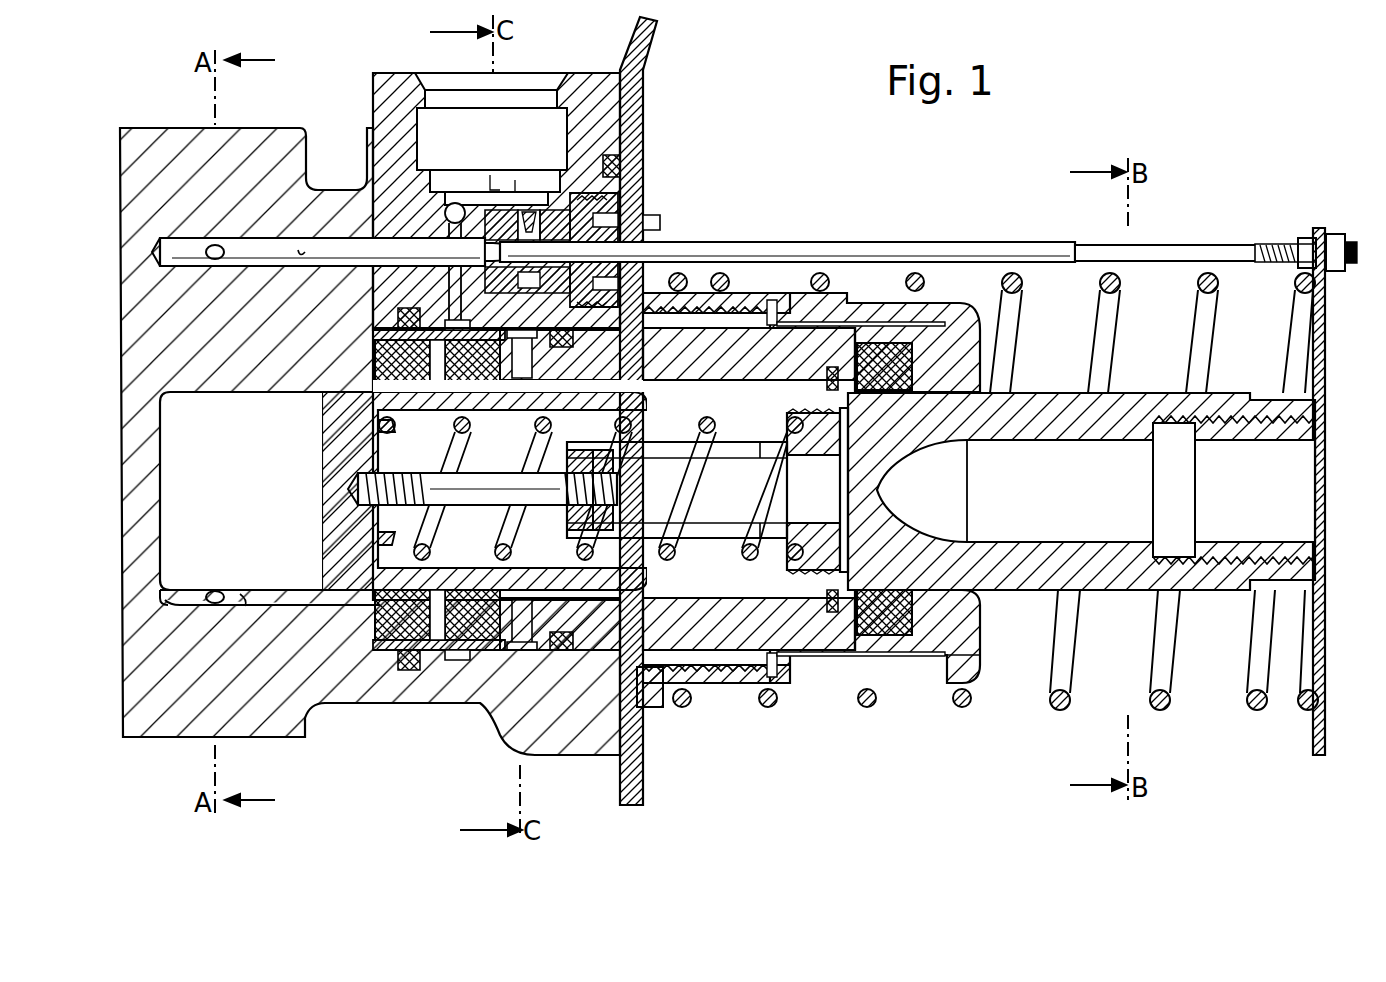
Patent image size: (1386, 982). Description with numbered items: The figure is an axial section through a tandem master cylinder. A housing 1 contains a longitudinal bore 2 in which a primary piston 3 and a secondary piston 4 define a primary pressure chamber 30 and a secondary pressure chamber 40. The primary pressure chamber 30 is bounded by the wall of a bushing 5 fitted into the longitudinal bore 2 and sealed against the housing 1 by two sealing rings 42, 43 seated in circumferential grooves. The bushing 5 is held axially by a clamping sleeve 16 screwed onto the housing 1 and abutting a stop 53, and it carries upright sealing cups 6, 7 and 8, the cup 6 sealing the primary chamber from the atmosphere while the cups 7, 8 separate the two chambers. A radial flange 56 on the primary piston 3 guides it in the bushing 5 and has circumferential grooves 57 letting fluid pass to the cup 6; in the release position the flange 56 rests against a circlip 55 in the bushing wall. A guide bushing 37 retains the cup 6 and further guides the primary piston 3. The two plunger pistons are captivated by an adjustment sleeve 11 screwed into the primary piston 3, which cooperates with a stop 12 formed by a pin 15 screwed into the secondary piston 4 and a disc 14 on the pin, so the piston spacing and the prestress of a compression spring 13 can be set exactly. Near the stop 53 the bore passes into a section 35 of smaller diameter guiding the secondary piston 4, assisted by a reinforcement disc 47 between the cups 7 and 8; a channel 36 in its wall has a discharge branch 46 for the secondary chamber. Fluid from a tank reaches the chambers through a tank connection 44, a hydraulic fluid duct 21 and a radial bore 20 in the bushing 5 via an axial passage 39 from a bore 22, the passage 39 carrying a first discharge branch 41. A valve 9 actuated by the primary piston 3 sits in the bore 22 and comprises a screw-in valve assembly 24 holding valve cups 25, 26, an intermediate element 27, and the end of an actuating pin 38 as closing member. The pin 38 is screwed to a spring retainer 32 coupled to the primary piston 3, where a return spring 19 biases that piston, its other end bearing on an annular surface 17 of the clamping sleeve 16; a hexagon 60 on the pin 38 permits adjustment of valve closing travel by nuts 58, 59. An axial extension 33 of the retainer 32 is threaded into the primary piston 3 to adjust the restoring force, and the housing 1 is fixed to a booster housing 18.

The housing 1 is at (155, 132).
The longitudinal bore 2 is at (590, 640).
The primary piston 3 is at (1020, 590).
The secondary piston 4 is at (328, 600).
The bushing 5 is at (690, 630).
The sealing cup 6 is at (890, 660).
The sealing cup 7 is at (482, 600).
The sealing cup 8 is at (395, 652).
The valve 9 is at (632, 212).
The adjustment sleeve 11 is at (800, 420).
The stop 12 is at (466, 452).
The compression spring 13 is at (745, 560).
The disc 14 is at (617, 515).
The pin 15 is at (467, 505).
The clamping sleeve 16 is at (950, 300).
The annular surface 17 is at (658, 712).
The booster housing 18 is at (640, 38).
The return spring 19 is at (1005, 300).
The radial bore 20 is at (533, 355).
The hydraulic fluid duct 21 is at (450, 290).
The bore 22 is at (556, 315).
The screw-in valve assembly 24 is at (630, 235).
The valve cup 25 is at (485, 215).
The valve cup 26 is at (560, 215).
The intermediate element 27 is at (525, 215).
The primary pressure chamber 30 is at (780, 580).
The spring retainer 32 is at (1327, 380).
The axial extension 33 is at (1270, 540).
The section of smaller diameter 35 is at (210, 392).
The channel 36 is at (246, 606).
The guide bushing 37 is at (930, 640).
The actuating pin 38 is at (755, 240).
The axial passage 39 is at (302, 247).
The secondary pressure chamber 40 is at (285, 590).
The first hydraulic fluid discharge branch 41 is at (218, 245).
The sealing ring 42 is at (408, 670).
The sealing ring 43 is at (558, 652).
The tank connection 44 is at (545, 108).
The hydraulic fluid discharge branch 46 is at (215, 603).
The reinforcement disc 47 is at (450, 660).
The stop 53 is at (365, 652).
The circlip 55 is at (845, 640).
The radial flange 56 is at (830, 375).
The circumferential grooves 57 is at (830, 615).
The nut 58 is at (1340, 240).
The nut 59 is at (1300, 240).
The hexagon 60 is at (1208, 246).